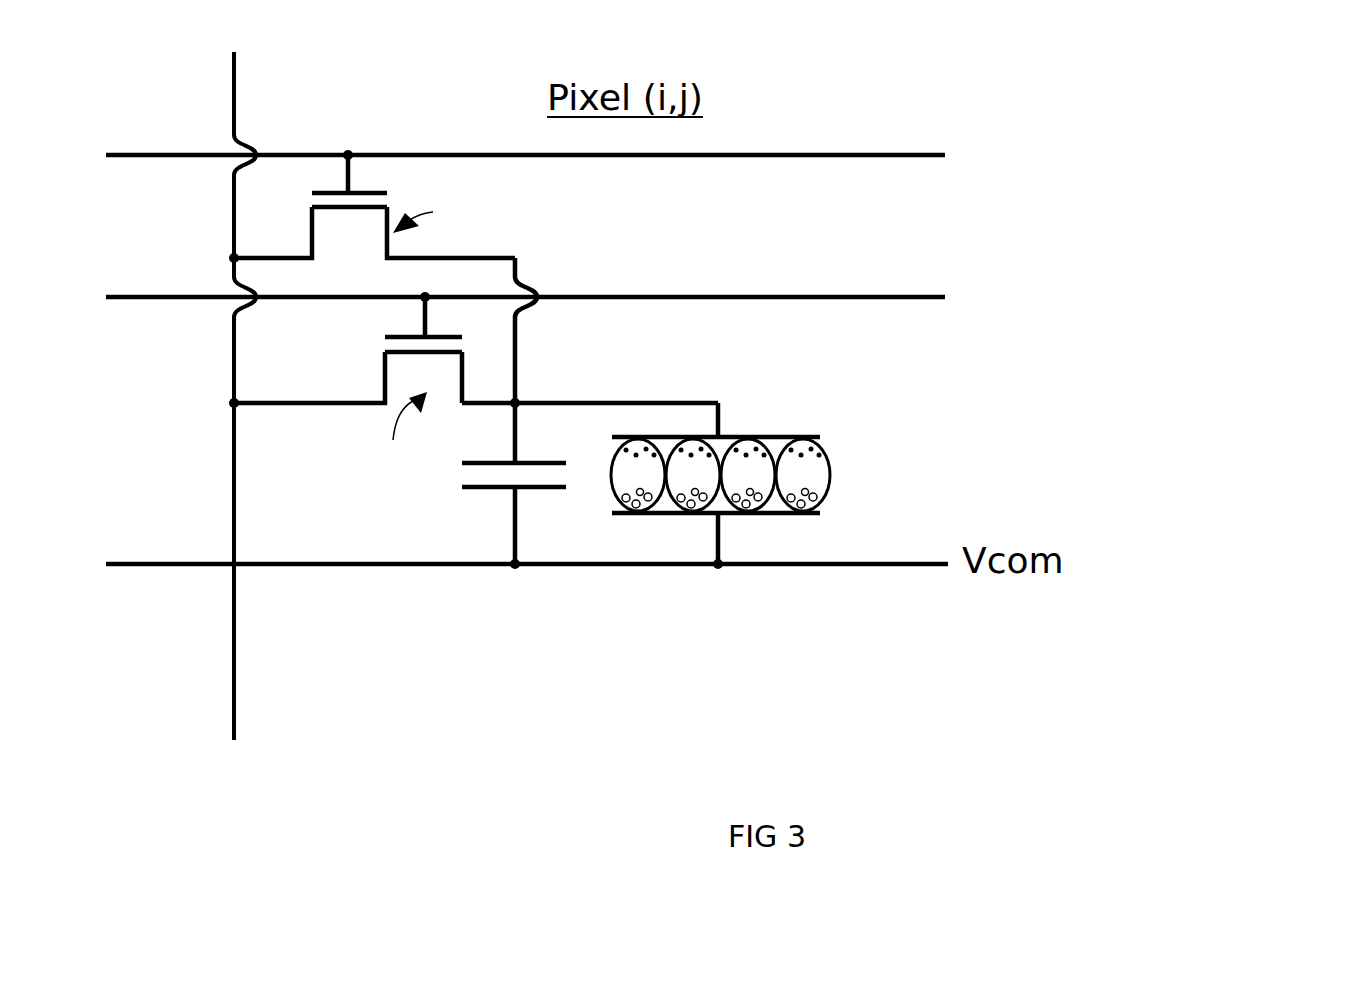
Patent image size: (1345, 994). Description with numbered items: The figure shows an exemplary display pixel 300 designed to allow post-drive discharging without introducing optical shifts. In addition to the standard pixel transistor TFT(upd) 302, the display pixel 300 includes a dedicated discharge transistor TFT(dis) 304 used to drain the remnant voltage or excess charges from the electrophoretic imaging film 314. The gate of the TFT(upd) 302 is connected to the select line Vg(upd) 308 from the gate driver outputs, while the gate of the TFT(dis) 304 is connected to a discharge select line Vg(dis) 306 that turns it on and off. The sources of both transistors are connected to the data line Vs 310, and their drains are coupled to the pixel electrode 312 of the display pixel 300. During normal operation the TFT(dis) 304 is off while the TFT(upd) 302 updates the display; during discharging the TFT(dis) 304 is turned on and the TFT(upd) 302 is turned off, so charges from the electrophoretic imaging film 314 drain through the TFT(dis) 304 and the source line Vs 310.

The display pixel 300 is at (1175, 82).
The TFT(upd) 302 is at (438, 400).
The TFT(dis) 304 is at (365, 170).
The Vg(dis) 306 is at (1082, 153).
The Vg(upd) 308 is at (1099, 297).
The Vs 310 is at (267, 775).
The pixel electrode 312 is at (874, 459).
The electrophoretic imaging film 314 is at (833, 482).